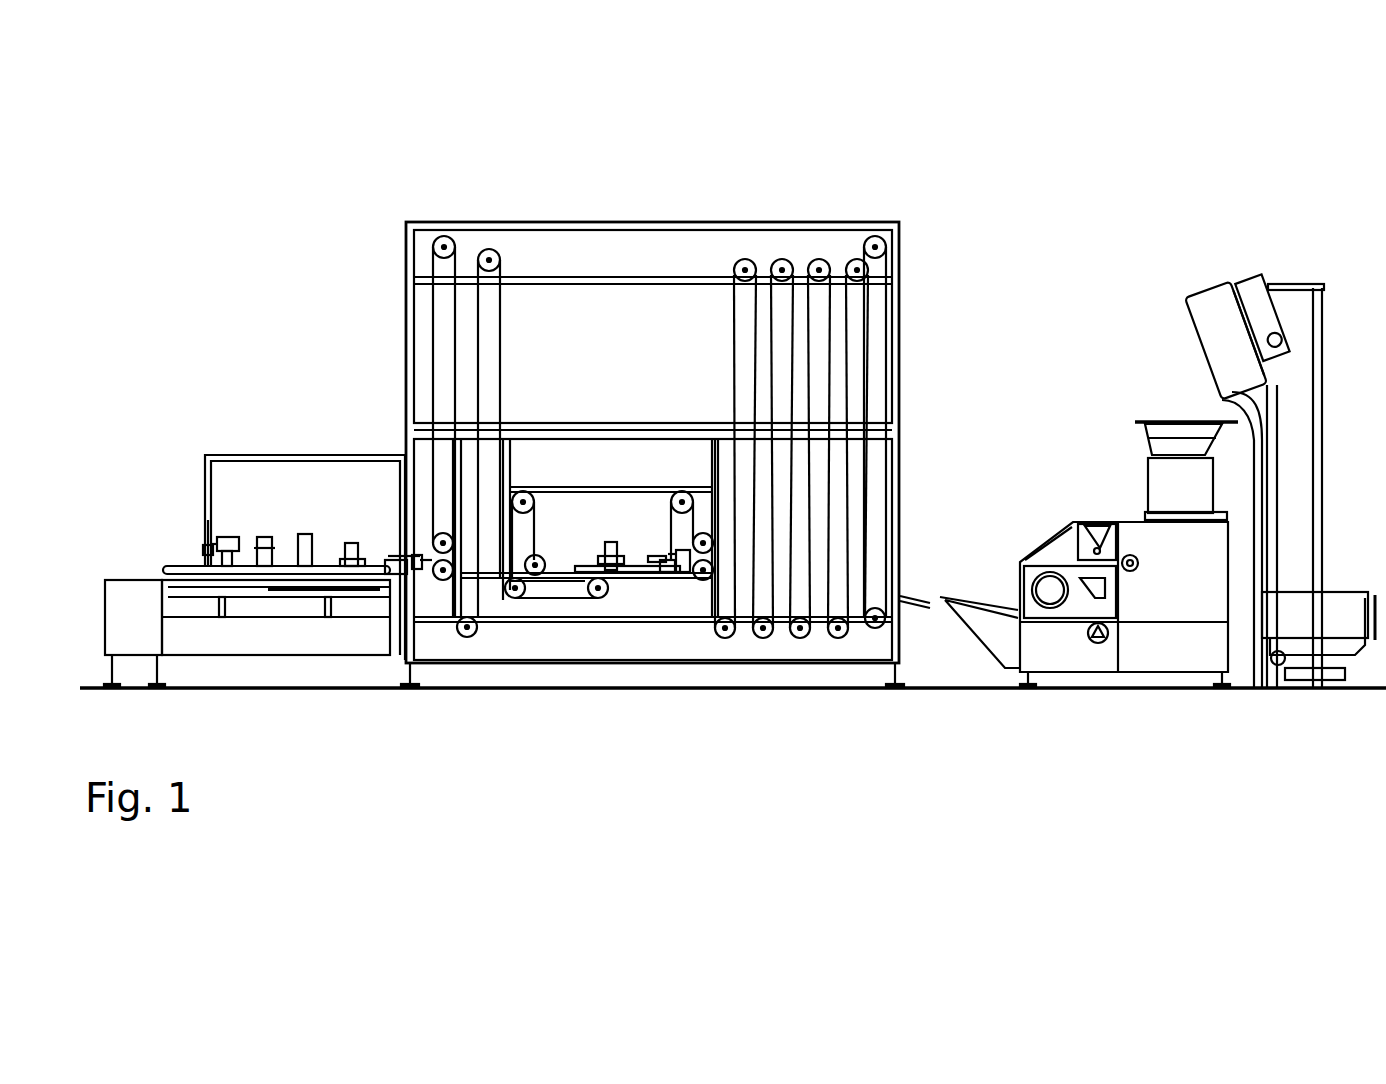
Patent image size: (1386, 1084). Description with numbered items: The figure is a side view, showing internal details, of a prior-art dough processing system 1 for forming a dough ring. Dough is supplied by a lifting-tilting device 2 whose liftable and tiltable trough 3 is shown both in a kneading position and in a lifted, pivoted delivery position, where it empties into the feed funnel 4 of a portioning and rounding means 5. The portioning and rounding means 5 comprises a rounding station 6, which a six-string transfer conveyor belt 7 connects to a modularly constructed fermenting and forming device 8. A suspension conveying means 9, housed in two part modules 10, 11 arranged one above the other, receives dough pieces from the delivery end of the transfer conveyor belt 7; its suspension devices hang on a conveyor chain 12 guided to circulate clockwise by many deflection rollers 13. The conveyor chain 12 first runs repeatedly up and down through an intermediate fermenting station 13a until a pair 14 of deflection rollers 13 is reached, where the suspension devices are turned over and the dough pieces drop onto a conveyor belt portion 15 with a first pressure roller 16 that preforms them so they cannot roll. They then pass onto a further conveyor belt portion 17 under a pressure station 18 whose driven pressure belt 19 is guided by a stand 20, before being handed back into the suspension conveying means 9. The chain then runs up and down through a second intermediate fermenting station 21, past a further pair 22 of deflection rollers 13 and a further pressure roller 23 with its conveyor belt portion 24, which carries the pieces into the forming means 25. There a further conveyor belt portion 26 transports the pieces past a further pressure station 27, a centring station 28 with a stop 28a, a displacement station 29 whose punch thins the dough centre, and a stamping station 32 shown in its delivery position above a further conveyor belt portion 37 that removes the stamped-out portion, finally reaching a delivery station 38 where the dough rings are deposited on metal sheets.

The dough processing system 1 is at (1110, 277).
The lifting-tilting device 2 is at (1335, 322).
The trough 3 is at (1205, 297).
The feed funnel 4 is at (1167, 428).
The portioning and rounding means 5 is at (1170, 672).
The rounding station 6 is at (1050, 590).
The transfer conveyor belt 7 is at (945, 598).
The fermenting and forming device 8 is at (915, 297).
The suspension conveying means 9 is at (900, 351).
The part module 10 is at (897, 450).
The part module 11 is at (897, 382).
The conveyor chain 12 is at (866, 492).
The deflection rollers 13 is at (714, 573).
The intermediate fermenting station 13a is at (915, 606).
The pair of deflection rollers 14 is at (837, 640).
The conveyor belt portion 15 is at (665, 578).
The first pressure roller 16 is at (680, 582).
The further conveyor belt portion 17 is at (583, 576).
The pressure station 18 is at (614, 588).
The pressure belt 19 is at (618, 576).
The stand 20 is at (600, 548).
The second intermediate fermenting station 21 is at (483, 323).
The further pair of deflection rollers 22 is at (444, 582).
The further pressure roller 23 is at (409, 602).
The conveyor belt portion 24 is at (390, 602).
The forming means 25 is at (277, 457).
The further conveyor belt portion 26 is at (175, 566).
The further pressure station 27 is at (353, 543).
The centring station 28 is at (306, 534).
The stop 28a is at (315, 592).
The displacement station 29 is at (263, 576).
The stamping station 32 is at (229, 537).
The further conveyor belt portion 37 is at (208, 520).
The delivery station 38 is at (124, 585).